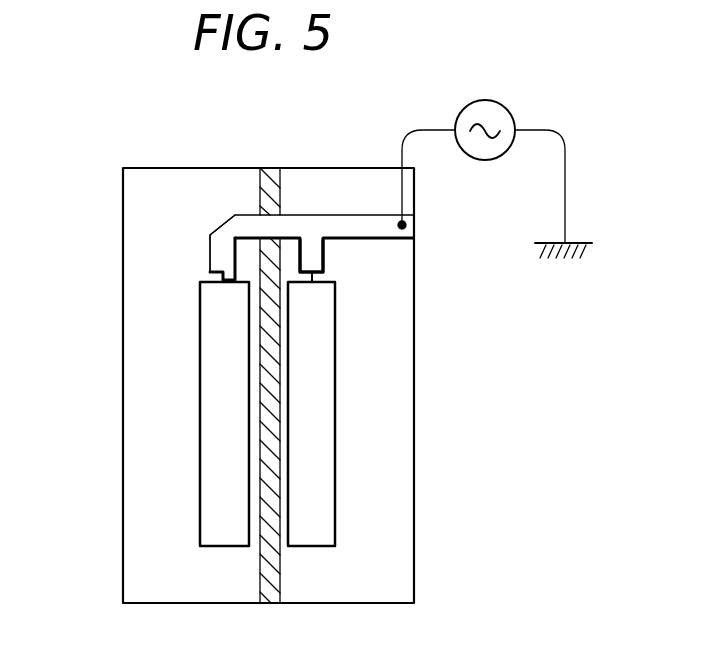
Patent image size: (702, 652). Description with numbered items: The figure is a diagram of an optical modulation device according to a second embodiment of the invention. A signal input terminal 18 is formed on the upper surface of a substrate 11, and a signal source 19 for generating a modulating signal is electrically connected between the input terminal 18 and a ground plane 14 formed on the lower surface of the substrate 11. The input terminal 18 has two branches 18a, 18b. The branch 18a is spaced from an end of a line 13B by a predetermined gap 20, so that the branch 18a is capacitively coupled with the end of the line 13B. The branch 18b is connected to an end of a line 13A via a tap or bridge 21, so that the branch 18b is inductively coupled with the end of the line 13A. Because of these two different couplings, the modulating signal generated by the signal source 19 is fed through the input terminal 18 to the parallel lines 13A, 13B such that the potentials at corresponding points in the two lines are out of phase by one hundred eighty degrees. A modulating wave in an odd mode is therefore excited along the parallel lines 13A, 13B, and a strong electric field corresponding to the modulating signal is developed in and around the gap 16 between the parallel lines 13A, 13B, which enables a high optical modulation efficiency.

The substrate 11 is at (390, 488).
The line 13A is at (220, 467).
The line 13B is at (322, 518).
The ground plane 14 is at (578, 243).
The gap 16 is at (255, 538).
The signal input terminal 18 is at (367, 228).
The branch 18a is at (312, 257).
The branch 18b is at (217, 250).
The signal source 19 is at (490, 100).
The gap 20 is at (328, 277).
The tap or bridge 21 is at (210, 278).